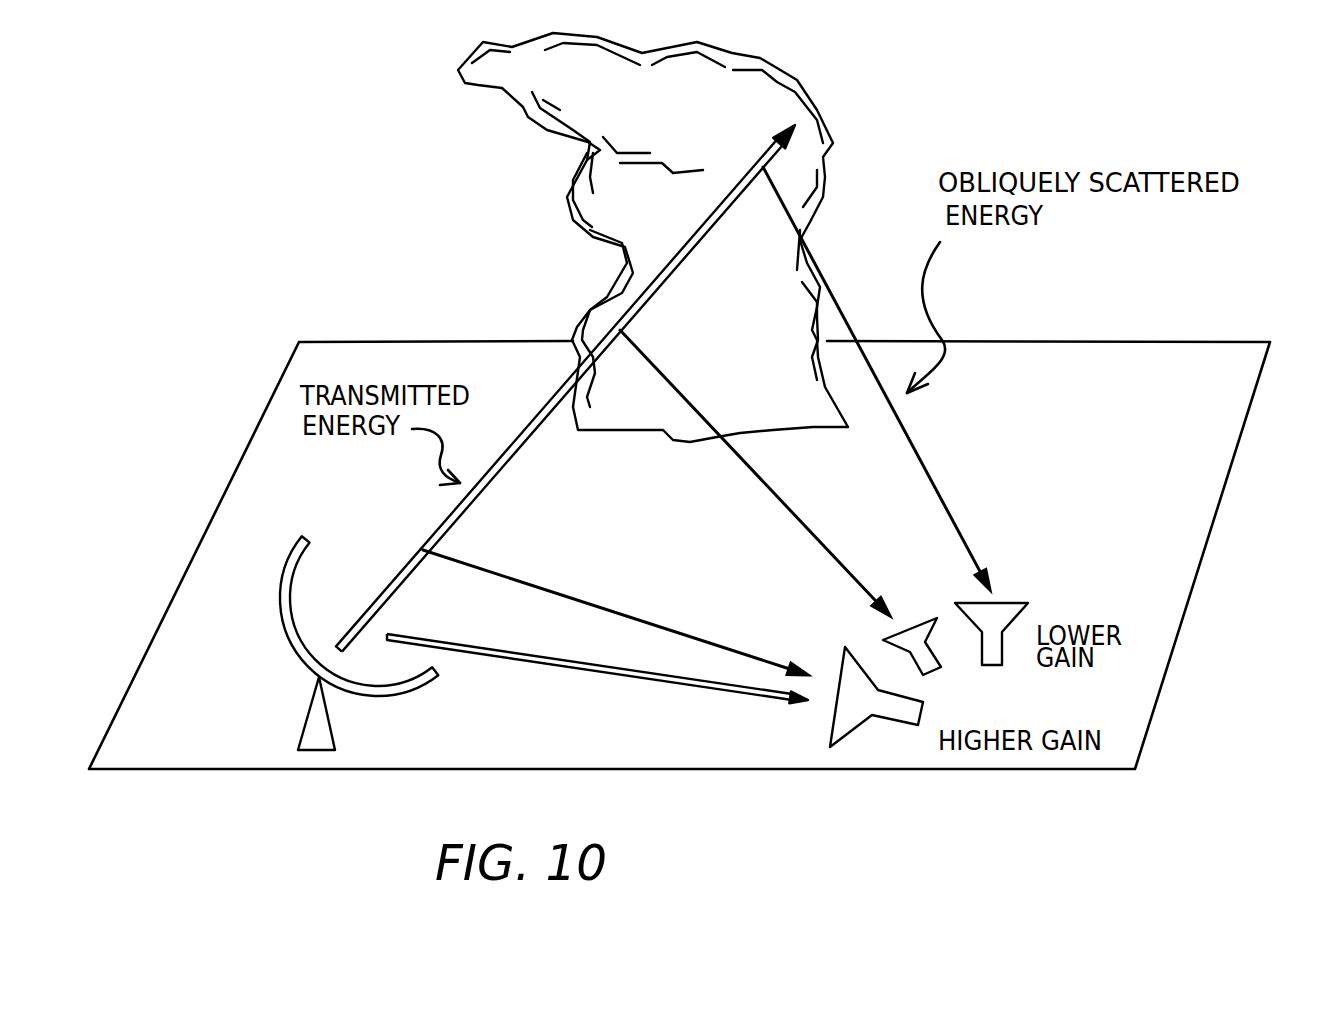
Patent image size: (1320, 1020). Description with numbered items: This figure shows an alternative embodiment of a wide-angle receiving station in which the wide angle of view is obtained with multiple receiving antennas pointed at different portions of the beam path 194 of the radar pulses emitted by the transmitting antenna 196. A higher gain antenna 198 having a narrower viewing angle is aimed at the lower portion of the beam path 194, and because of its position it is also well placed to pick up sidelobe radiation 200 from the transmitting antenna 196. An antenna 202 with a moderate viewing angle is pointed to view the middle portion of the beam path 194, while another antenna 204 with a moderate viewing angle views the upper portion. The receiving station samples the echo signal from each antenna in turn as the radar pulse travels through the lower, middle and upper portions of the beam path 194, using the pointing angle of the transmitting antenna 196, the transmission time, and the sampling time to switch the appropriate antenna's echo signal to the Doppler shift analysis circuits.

The beam path 194 is at (540, 407).
The transmitting antenna 196 is at (279, 608).
The higher gain antenna 198 is at (858, 728).
The sidelobe radiation 200 is at (667, 683).
The antenna with a moderate viewing angle 202 is at (930, 655).
The antenna with a moderate viewing angle 204 is at (1015, 613).